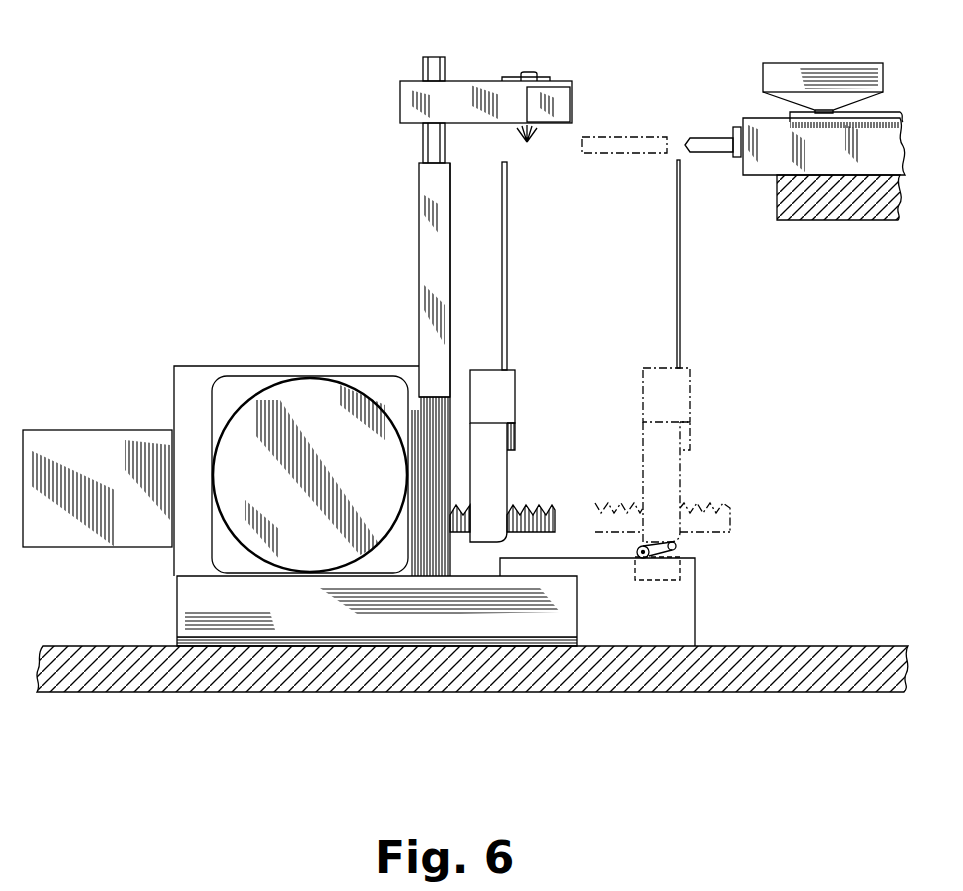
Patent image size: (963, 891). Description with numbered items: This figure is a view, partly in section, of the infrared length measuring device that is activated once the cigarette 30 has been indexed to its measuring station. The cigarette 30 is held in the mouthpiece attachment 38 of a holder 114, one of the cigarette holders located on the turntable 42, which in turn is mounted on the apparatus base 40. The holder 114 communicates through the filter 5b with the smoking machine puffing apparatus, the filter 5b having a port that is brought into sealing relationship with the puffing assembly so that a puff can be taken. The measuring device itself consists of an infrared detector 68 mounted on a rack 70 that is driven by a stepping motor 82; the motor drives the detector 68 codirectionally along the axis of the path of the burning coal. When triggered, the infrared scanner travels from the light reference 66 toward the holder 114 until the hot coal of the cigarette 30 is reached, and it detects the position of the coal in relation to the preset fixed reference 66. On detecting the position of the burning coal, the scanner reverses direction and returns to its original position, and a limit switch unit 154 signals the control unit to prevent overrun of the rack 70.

The apparatus base 40 is at (742, 645).
The stepping motor 82 is at (321, 428).
The light reference 66 is at (523, 143).
The infrared detector 68 is at (507, 275).
The rack 70 is at (514, 510).
The limit switch unit 154 is at (677, 548).
The cigarette 30 is at (681, 145).
The mouthpiece attachment 38 is at (737, 158).
The holder 114 is at (762, 118).
The turntable 42 is at (805, 221).
The filter 5b is at (826, 63).